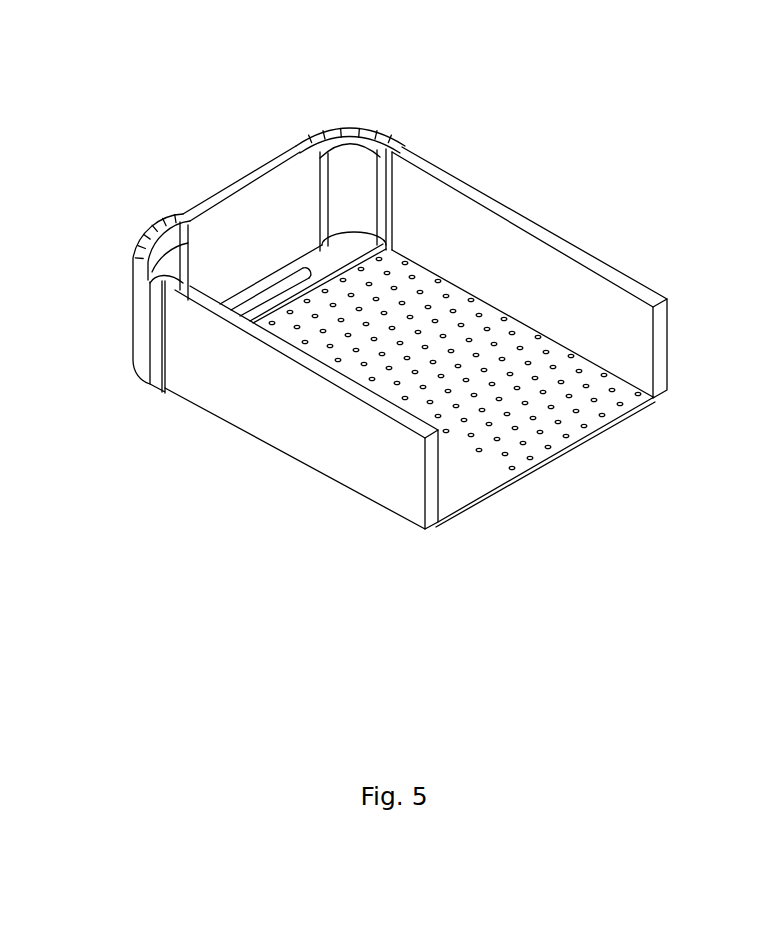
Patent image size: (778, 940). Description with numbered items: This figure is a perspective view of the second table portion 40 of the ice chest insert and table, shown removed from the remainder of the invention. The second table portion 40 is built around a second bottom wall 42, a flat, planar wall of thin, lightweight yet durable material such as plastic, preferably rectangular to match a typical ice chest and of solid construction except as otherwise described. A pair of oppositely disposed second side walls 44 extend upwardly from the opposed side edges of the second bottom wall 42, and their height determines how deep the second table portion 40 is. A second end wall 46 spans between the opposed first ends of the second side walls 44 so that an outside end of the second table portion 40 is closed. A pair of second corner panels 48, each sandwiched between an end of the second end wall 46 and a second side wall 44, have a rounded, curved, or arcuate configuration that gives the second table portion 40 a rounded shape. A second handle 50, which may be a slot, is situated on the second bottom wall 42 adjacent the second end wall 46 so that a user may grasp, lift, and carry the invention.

The second table portion 40 is at (504, 83).
The second bottom wall 42 is at (528, 428).
The second side walls 44 is at (573, 290).
The second end wall 46 is at (241, 238).
The second corner panels 48 is at (357, 165).
The second handle 50 is at (296, 258).